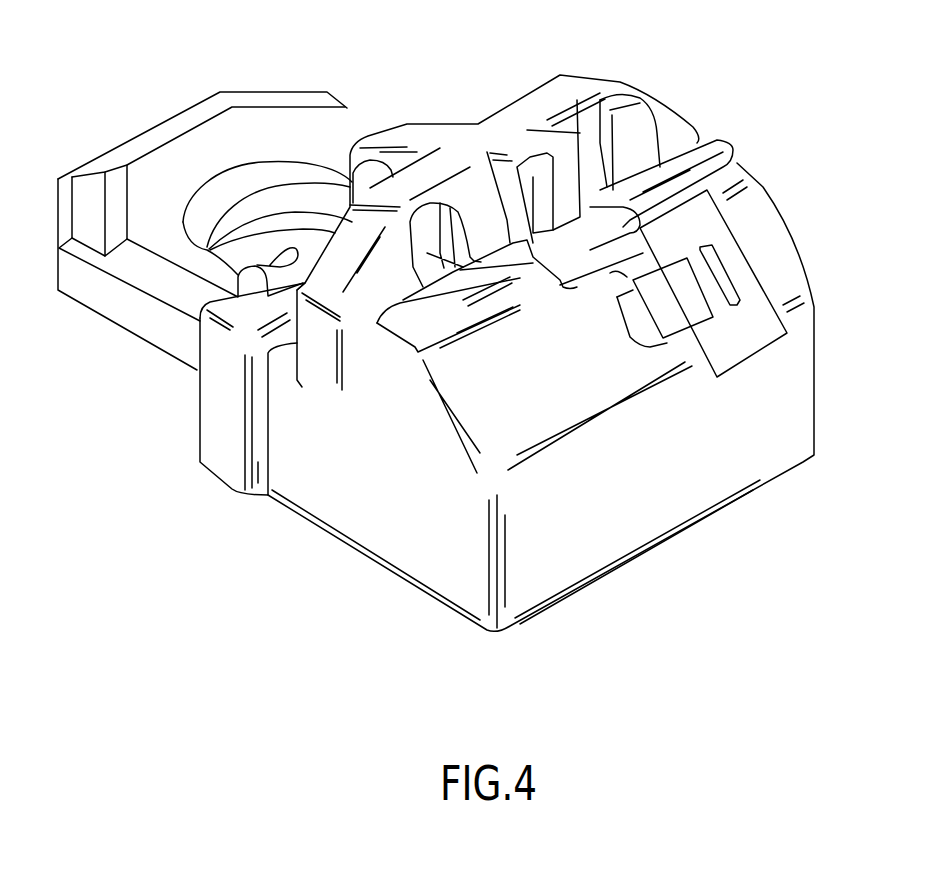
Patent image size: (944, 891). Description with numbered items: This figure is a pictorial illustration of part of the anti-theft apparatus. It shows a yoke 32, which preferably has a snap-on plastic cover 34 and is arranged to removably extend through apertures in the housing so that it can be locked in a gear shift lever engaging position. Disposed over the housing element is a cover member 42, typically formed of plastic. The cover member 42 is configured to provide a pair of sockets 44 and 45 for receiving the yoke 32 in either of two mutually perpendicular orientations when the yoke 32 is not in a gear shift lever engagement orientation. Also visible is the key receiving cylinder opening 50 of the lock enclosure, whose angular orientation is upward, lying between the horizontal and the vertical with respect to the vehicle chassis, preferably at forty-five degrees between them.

The yoke 32 is at (280, 203).
The snap on plastic cover 34 is at (345, 126).
The cover member 42 is at (388, 537).
The socket 44 is at (540, 180).
The socket 45 is at (633, 147).
The key receiving cylinder opening 50 is at (627, 277).